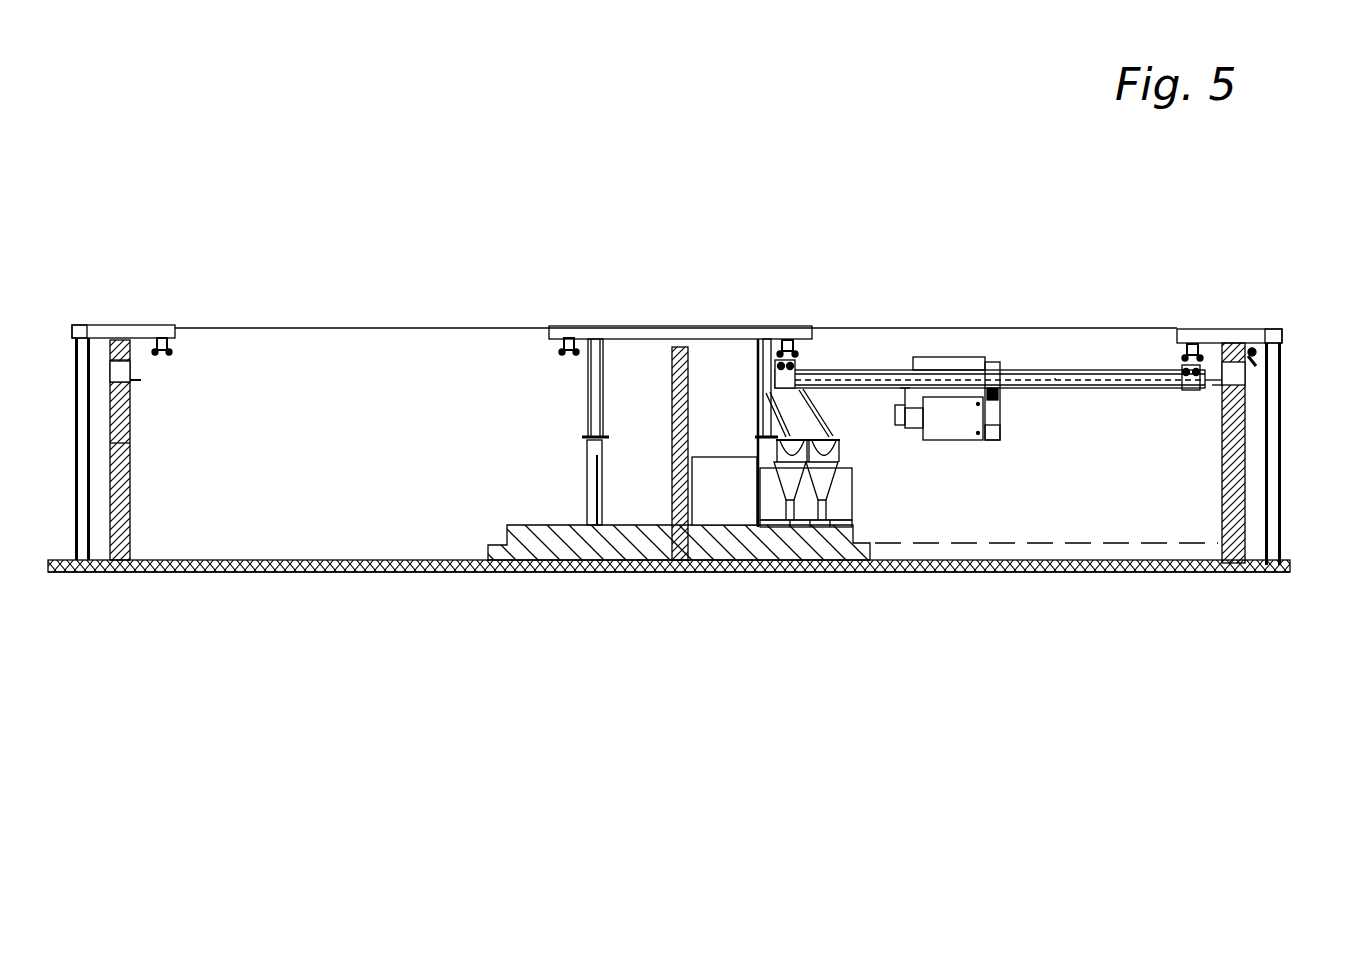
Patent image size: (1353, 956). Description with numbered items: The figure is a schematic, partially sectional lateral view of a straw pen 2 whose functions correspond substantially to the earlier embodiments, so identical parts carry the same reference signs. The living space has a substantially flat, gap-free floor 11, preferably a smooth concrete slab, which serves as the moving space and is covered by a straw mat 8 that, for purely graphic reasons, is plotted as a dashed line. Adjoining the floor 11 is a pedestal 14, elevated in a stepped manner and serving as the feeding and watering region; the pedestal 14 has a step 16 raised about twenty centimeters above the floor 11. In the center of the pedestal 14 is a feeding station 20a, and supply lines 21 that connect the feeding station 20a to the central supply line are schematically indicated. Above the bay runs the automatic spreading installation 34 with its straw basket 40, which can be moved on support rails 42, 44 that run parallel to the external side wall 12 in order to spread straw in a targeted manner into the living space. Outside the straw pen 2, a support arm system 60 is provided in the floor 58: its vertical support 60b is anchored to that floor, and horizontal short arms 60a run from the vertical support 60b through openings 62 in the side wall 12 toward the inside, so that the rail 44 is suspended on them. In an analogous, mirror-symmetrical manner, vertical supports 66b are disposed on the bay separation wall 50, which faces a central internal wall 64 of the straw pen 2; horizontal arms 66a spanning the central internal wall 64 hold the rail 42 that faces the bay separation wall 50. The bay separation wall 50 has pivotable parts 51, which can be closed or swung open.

The straw pen 2 is at (852, 243).
The straw mat 8 is at (1100, 548).
The floor 11 is at (984, 556).
The side wall 12 is at (1228, 478).
The pedestal 14 is at (958, 355).
The step 16 is at (864, 542).
The feeding station 20a is at (854, 445).
The supply lines 21 is at (840, 437).
The automatic spreading installation 34 is at (778, 421).
The straw basket 40 is at (946, 415).
The support rail 42 is at (791, 352).
The support rail 44 is at (1185, 350).
The bay separation wall 50 is at (755, 505).
The pivotable part 51 is at (725, 475).
The floor 58 is at (1290, 555).
The support arm system 60 is at (1299, 318).
The horizontal short arm 60a is at (1233, 330).
The vertical support 60b is at (1275, 430).
The opening 62 is at (1252, 364).
The central internal wall 64 is at (676, 497).
The horizontal arm 66a is at (724, 333).
The vertical support 66b is at (765, 420).